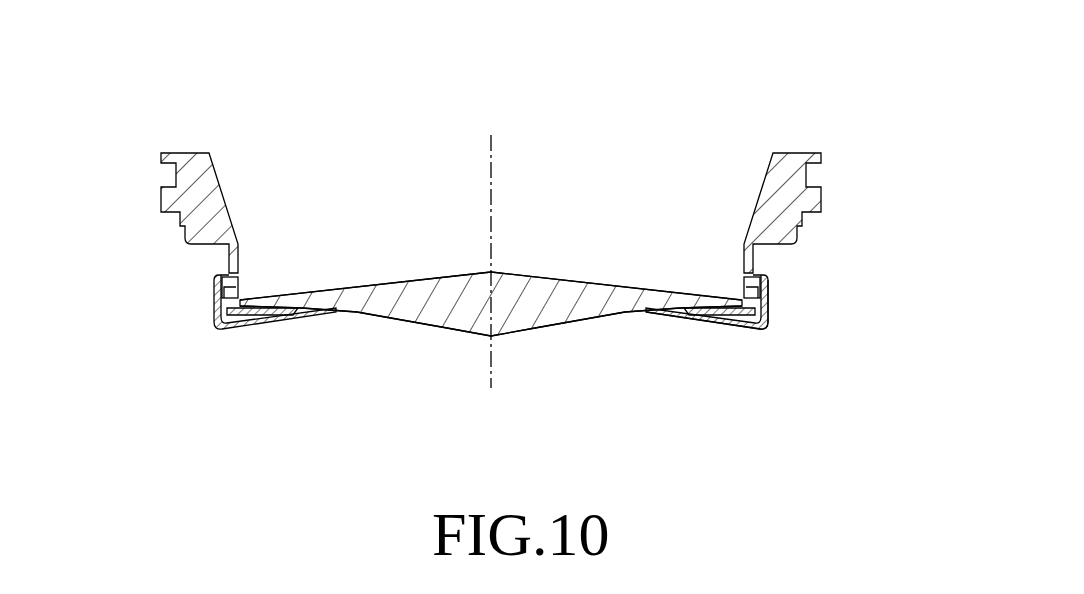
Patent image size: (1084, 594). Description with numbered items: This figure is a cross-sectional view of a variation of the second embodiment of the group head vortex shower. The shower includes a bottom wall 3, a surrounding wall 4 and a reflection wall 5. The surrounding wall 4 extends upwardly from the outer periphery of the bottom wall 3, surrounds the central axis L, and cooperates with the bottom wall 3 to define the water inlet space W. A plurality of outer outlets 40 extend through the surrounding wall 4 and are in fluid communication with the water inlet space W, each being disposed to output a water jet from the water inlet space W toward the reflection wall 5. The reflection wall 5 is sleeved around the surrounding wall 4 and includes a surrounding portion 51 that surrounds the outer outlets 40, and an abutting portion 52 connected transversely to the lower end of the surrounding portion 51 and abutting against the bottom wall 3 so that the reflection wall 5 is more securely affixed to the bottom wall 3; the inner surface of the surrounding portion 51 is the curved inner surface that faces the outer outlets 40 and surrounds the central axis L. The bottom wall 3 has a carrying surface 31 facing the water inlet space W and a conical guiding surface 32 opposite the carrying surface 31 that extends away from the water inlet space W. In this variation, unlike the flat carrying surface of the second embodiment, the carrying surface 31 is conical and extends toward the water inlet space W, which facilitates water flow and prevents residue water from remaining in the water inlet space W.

The bottom wall 3 is at (491, 267).
The carrying surface 31 is at (538, 272).
The guiding surface 32 is at (553, 329).
The surrounding wall 4 is at (180, 202).
The outer outlets 40 is at (213, 292).
The reflection wall 5 is at (563, 348).
The surrounding portion 51 is at (770, 318).
The abutting portion 52 is at (720, 328).
The water inlet space W is at (407, 167).
The central axis L is at (490, 244).